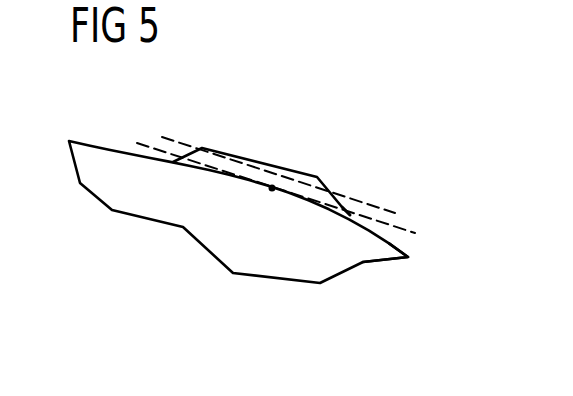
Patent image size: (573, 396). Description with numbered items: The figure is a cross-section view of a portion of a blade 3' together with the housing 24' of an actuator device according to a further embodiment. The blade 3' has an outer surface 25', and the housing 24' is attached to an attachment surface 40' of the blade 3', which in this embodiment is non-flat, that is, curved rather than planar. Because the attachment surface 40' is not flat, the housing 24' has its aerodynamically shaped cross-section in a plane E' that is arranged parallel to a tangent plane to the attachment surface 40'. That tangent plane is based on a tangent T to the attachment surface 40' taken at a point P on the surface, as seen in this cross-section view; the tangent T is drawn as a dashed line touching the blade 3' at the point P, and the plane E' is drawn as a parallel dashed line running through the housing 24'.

The blade 3' is at (257, 212).
The housing 24' is at (261, 161).
The non-flat attachment surface 40' is at (364, 189).
The outer surface 25' is at (416, 248).
The tangent T is at (143, 141).
The plane E' is at (278, 143).
The point P is at (272, 193).